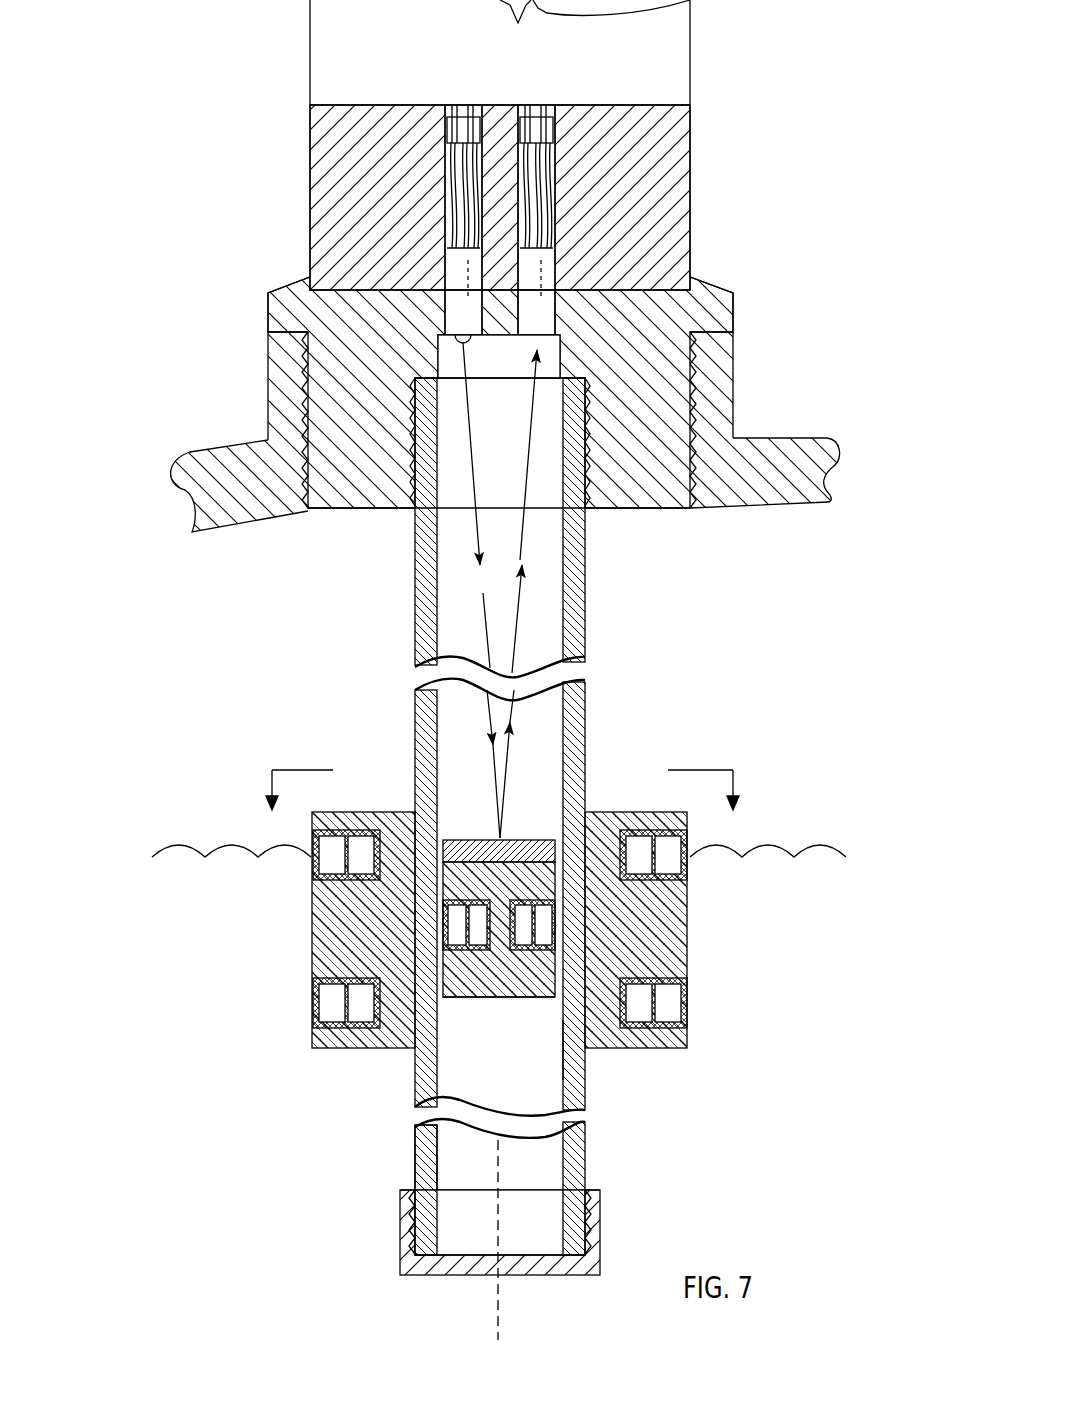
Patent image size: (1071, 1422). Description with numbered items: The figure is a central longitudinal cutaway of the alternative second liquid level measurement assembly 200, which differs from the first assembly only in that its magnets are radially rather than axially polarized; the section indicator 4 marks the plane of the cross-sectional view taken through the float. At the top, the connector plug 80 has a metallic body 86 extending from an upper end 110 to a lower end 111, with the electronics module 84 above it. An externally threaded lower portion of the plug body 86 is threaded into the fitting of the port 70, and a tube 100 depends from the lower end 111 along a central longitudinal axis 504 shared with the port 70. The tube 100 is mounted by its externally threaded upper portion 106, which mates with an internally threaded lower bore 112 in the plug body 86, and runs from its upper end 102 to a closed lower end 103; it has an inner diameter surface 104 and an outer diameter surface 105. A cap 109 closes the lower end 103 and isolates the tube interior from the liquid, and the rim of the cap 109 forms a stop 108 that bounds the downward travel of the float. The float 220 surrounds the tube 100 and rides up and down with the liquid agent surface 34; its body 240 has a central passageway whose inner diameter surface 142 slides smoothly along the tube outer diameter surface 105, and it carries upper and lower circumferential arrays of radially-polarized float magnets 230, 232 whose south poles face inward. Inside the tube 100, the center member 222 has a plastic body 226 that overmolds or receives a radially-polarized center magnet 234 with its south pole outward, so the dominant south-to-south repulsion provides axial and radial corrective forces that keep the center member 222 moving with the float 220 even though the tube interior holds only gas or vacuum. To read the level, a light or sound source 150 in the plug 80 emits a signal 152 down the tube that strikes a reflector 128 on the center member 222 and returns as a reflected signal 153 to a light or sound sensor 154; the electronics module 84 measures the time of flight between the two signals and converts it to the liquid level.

The connector plug 80 is at (720, 122).
The electronics module 84 is at (634, 56).
The body of the connector plug 86 is at (357, 193).
The upper end of the plug body 110 is at (348, 105).
The port 70 is at (284, 385).
The lower end of the plug body 111 is at (600, 510).
The light or sound source 150 is at (456, 305).
The light or sound sensor 154 is at (545, 281).
The upper end of the tube 102 is at (420, 373).
The externally threaded upper portion 106 is at (592, 407).
The internally threaded lower bore 112 is at (574, 486).
The light or sound signal 152 is at (483, 613).
The return/reflected signal 153 is at (517, 638).
The reflector 128 is at (525, 848).
The liquid agent surface 34 is at (753, 846).
The second liquid level measurement assembly 200 is at (473, 922).
The float 220 is at (707, 943).
The upper float magnets 230 is at (304, 838).
The lower float magnets 232 is at (304, 1005).
The body of the float 240 is at (672, 913).
The center magnet 234 is at (556, 934).
The center member 222 is at (567, 914).
The inner diameter surface 142 is at (510, 982).
The body of the center member 226 is at (575, 1015).
The tube 100 is at (622, 1150).
The outer diameter surface 105 is at (415, 1143).
The inner diameter surface 104 is at (487, 1256).
The stop 108 is at (585, 1190).
The cap 109 is at (413, 1267).
The lower end of the tube 103 is at (565, 1262).
The central longitudinal axis 504 is at (498, 1295).
The section line 4 is at (498, 798).